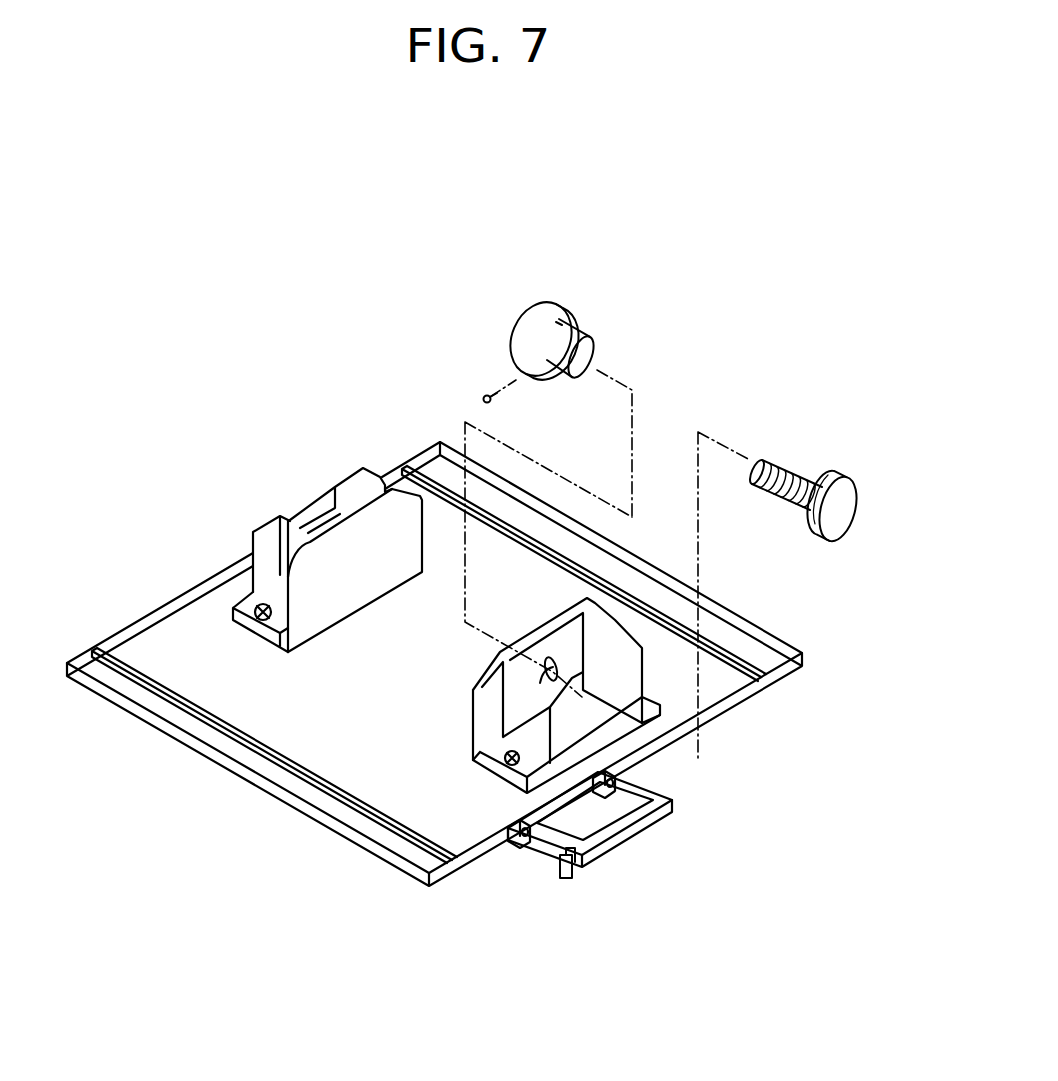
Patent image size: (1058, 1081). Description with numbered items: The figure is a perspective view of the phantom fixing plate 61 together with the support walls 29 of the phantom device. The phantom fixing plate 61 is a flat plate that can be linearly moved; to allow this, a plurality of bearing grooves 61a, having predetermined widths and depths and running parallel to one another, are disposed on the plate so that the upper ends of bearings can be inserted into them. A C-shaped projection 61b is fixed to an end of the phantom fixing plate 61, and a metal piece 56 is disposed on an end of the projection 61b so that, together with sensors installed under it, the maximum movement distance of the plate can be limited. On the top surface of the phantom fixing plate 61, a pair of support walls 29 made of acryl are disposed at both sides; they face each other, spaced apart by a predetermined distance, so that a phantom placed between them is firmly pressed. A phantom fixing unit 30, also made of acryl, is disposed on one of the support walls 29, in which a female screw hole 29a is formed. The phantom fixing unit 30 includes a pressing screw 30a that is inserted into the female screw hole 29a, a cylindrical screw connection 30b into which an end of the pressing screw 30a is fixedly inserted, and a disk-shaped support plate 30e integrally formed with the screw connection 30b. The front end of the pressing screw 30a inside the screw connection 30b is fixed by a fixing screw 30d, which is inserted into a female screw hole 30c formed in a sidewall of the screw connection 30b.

The support walls 29 is at (355, 540).
The female screw hole 29a is at (568, 668).
The phantom fixing unit 30 is at (655, 235).
The pressing screw 30a is at (847, 498).
The screw connection 30b is at (597, 356).
The female screw hole 30c is at (552, 362).
The fixing screw 30d is at (485, 397).
The support plate 30e is at (549, 322).
The metal piece 56 is at (562, 872).
The phantom fixing plate 61 is at (167, 745).
The bearing grooves 61a is at (130, 680).
The C-shaped projection 61b is at (693, 788).